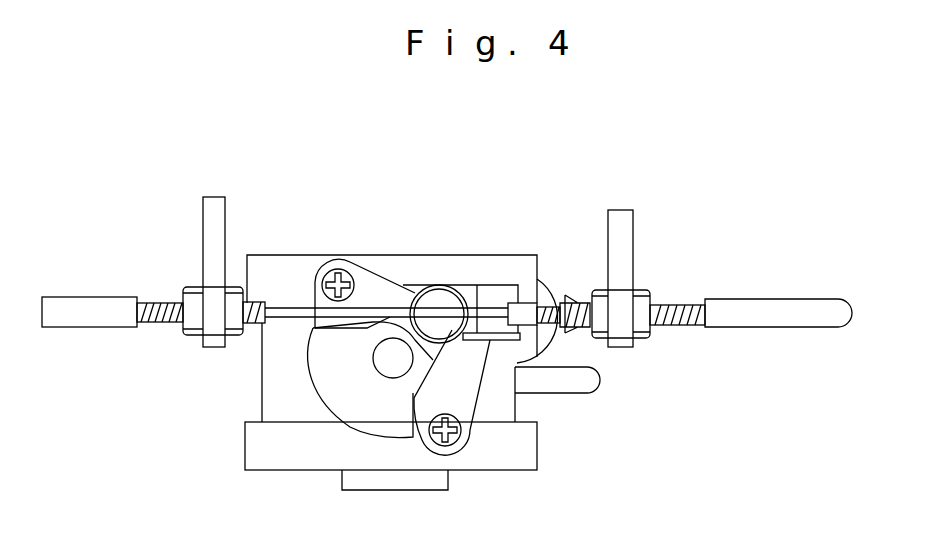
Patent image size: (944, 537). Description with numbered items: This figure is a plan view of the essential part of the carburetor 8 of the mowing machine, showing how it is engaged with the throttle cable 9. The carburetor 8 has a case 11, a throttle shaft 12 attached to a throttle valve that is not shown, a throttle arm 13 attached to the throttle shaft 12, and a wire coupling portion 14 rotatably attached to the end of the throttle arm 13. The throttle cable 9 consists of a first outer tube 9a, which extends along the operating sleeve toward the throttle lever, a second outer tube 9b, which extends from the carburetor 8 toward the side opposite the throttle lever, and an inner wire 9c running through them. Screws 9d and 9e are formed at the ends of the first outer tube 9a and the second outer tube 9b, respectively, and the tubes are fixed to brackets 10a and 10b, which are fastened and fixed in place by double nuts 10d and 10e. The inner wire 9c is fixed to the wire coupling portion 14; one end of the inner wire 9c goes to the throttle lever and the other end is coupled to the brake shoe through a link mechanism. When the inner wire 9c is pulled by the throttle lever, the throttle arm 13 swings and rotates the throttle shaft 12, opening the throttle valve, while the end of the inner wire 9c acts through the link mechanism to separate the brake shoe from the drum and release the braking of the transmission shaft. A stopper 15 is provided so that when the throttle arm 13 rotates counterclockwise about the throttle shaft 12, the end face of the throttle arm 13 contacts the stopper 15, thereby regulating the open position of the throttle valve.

The carburetor 8 is at (245, 443).
The throttle cable 9 is at (76, 329).
The first outer tube 9a is at (80, 297).
The second outer tube 9b is at (793, 305).
The inner wire 9c is at (293, 307).
The screw 9d is at (158, 323).
The screw 9e is at (586, 300).
The bracket 10a is at (203, 228).
The bracket 10b is at (635, 232).
The double nuts 10d is at (237, 337).
The double nuts 10e is at (640, 340).
The case 11 is at (420, 270).
The throttle shaft 12 is at (380, 357).
The throttle arm 13 is at (445, 332).
The wire coupling portion 14 is at (428, 352).
The stopper 15 is at (503, 340).